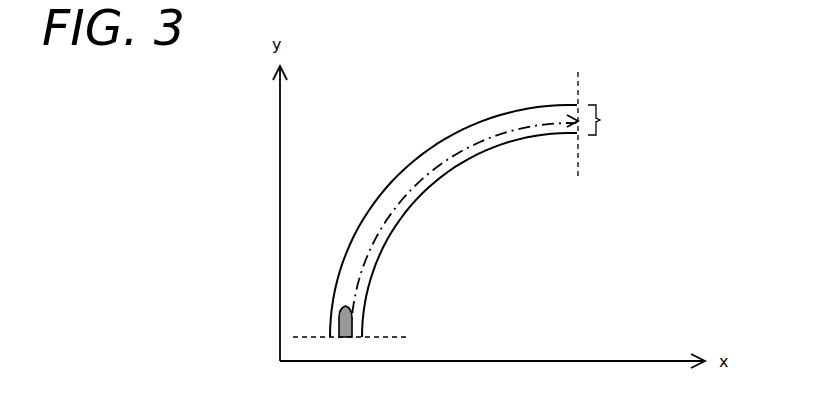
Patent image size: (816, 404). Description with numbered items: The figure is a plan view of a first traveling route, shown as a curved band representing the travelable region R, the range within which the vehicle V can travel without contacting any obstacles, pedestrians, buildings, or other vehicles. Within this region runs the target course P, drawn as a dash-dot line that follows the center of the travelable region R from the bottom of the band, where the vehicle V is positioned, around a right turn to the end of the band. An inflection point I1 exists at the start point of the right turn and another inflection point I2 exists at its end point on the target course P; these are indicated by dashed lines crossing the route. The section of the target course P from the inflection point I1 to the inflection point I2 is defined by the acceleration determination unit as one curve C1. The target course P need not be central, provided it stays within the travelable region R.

The target course P is at (427, 168).
The curve C1 is at (428, 190).
The vehicle V is at (353, 318).
The travelable region R is at (604, 120).
The inflection point I1 is at (362, 347).
The inflection point I2 is at (577, 145).